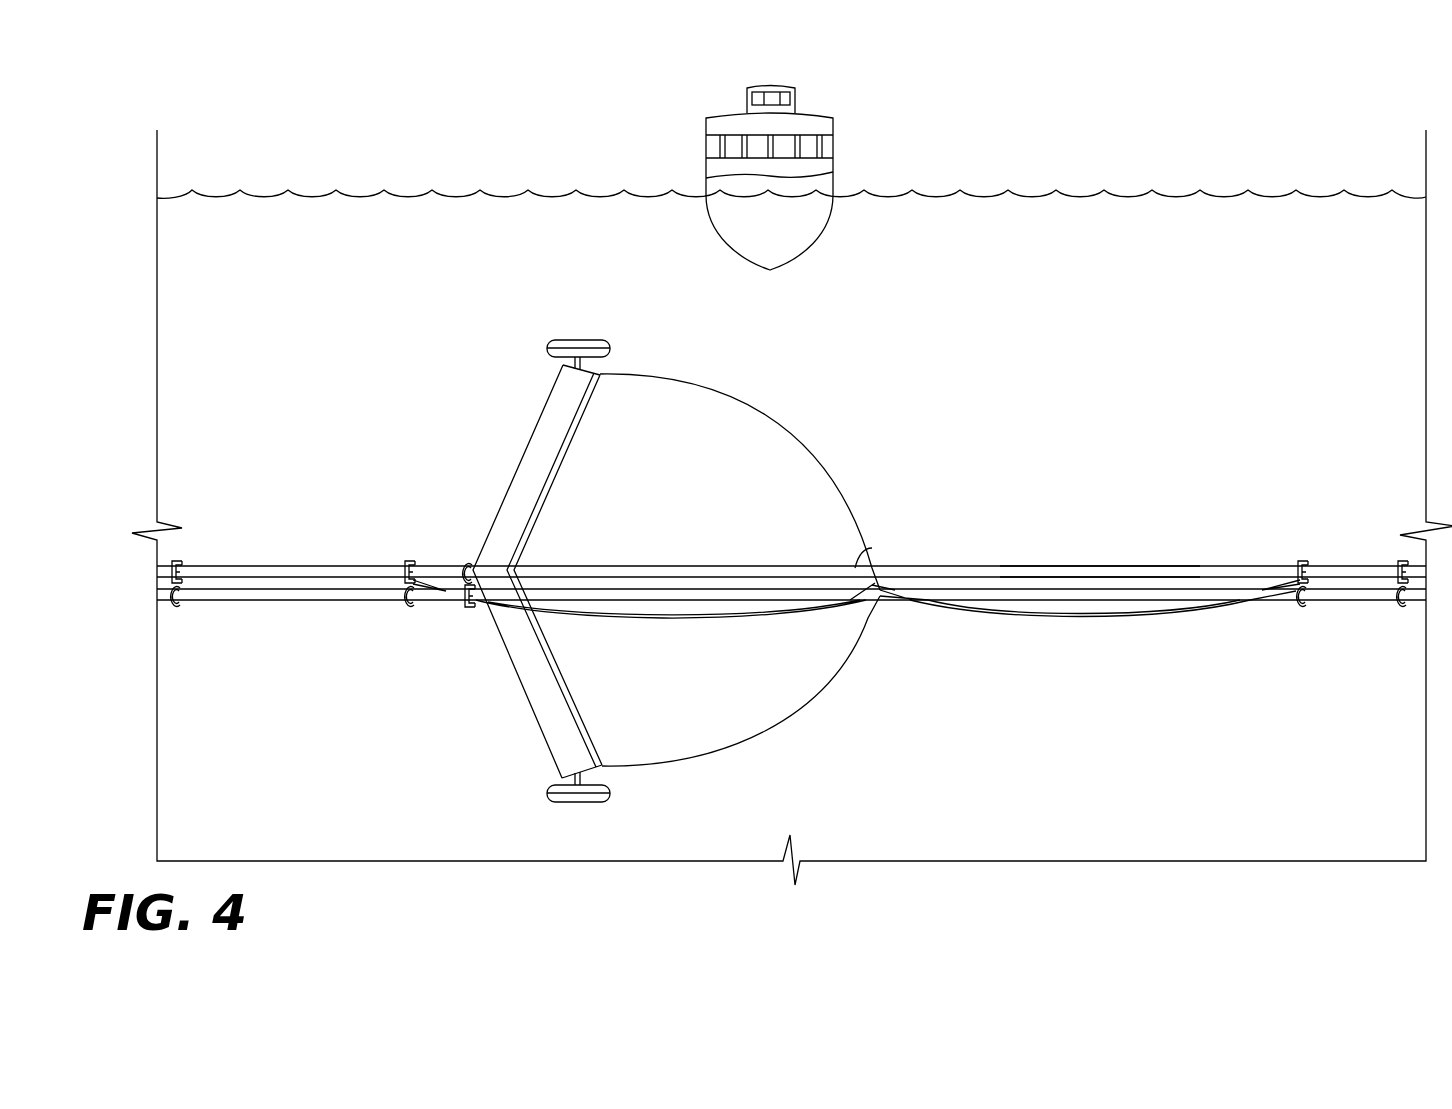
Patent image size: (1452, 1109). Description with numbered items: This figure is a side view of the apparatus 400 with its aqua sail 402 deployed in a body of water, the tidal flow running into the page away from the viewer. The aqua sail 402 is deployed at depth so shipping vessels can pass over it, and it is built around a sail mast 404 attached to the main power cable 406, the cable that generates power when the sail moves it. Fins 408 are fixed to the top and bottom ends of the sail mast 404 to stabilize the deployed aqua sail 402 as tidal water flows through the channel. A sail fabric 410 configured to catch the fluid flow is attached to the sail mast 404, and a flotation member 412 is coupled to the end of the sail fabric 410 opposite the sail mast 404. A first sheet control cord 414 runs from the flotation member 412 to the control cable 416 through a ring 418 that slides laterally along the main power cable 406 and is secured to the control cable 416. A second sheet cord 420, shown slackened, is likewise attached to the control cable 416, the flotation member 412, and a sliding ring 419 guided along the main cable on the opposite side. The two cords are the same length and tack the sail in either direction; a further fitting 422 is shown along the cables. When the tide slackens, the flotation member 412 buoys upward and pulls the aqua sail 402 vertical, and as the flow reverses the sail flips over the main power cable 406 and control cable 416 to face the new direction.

The apparatus 400 is at (797, 43).
The aqua sail 402 is at (858, 455).
The sail mast 404 is at (540, 455).
The main power cable 406 is at (464, 606).
The fins 408 is at (580, 340).
The sail fabric 410 is at (680, 406).
The flotation member 412 is at (872, 563).
The first sheet control cord 414 is at (1050, 620).
The control cable 416 is at (1060, 570).
The ring 418 is at (1303, 606).
The sliding ring 419 is at (406, 601).
The second sheet cord 420 is at (762, 618).
The clip 422 is at (464, 558).